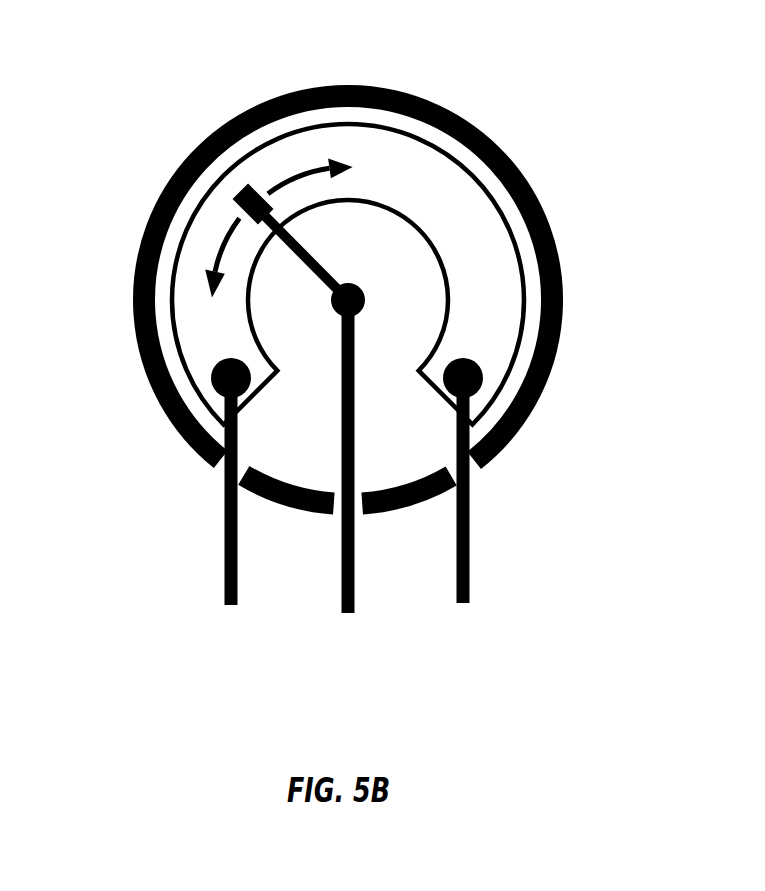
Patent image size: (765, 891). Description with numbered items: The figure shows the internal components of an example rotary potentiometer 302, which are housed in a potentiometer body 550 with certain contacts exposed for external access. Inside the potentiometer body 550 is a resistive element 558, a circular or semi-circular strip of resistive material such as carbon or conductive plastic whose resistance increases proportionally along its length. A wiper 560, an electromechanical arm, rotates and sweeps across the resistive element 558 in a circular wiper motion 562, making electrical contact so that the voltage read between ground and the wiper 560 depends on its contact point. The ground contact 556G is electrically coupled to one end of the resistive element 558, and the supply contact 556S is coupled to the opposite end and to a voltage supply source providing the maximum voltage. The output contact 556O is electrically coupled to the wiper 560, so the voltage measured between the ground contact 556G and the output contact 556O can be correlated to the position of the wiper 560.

The rotary potentiometer 302 is at (536, 34).
The potentiometer body 550 is at (153, 402).
The resistive element 558 is at (472, 232).
The wiper 560 is at (238, 195).
The circular wiper motion 562 is at (294, 177).
The ground contact 556G is at (231, 610).
The output contact 556O is at (347, 617).
The supply contact 556S is at (462, 610).